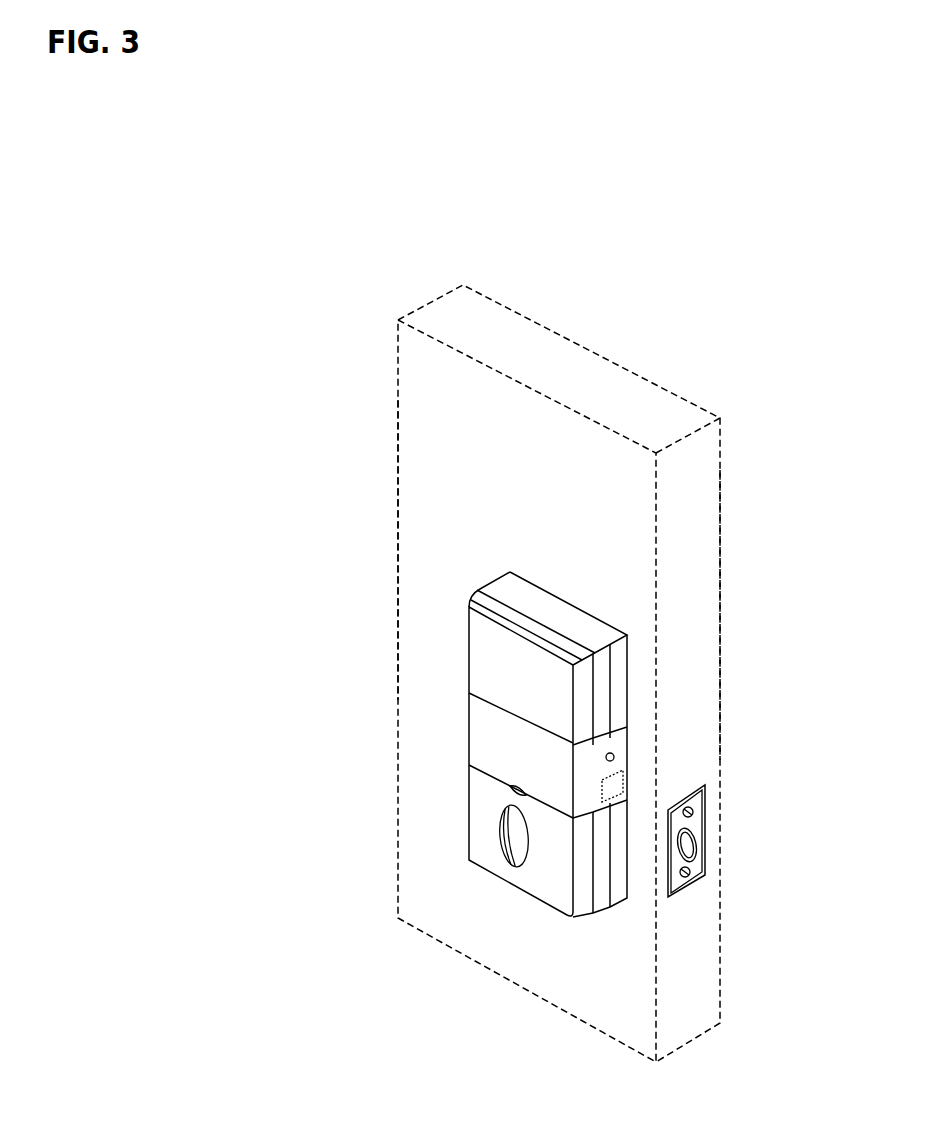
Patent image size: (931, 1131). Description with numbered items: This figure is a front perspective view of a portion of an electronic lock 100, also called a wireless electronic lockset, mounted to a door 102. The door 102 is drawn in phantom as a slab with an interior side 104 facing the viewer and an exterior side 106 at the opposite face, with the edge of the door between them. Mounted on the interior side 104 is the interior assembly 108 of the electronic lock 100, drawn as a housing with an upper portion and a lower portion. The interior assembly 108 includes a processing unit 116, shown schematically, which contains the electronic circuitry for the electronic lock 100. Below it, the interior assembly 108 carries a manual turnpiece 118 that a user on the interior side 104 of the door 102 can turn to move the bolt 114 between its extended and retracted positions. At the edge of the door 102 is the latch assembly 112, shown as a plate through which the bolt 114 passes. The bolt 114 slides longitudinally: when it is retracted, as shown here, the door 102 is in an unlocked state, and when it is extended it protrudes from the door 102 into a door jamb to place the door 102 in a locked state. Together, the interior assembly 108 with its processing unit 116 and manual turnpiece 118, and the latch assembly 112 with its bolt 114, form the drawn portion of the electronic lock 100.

The electronic lock 100 is at (471, 707).
The door 102 is at (552, 370).
The interior side 104 is at (422, 388).
The exterior side 106 is at (719, 462).
The interior assembly 108 is at (562, 592).
The latch assembly 112 is at (731, 864).
The bolt 114 is at (685, 843).
The processing unit 116 is at (597, 782).
The manual turnpiece 118 is at (497, 830).